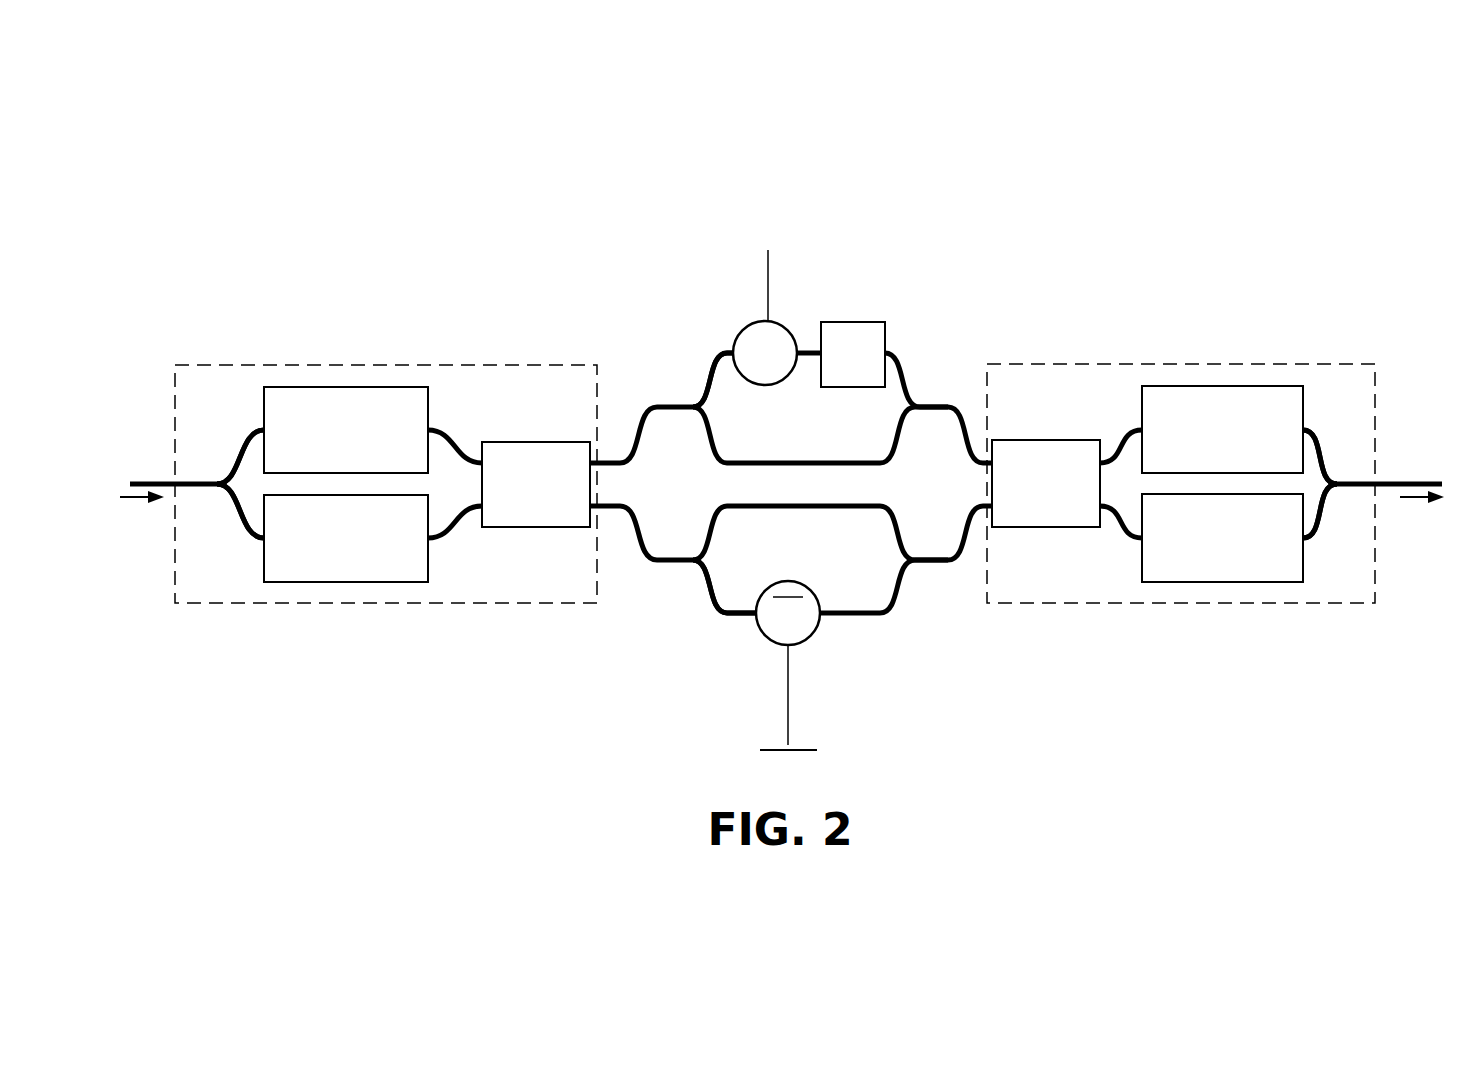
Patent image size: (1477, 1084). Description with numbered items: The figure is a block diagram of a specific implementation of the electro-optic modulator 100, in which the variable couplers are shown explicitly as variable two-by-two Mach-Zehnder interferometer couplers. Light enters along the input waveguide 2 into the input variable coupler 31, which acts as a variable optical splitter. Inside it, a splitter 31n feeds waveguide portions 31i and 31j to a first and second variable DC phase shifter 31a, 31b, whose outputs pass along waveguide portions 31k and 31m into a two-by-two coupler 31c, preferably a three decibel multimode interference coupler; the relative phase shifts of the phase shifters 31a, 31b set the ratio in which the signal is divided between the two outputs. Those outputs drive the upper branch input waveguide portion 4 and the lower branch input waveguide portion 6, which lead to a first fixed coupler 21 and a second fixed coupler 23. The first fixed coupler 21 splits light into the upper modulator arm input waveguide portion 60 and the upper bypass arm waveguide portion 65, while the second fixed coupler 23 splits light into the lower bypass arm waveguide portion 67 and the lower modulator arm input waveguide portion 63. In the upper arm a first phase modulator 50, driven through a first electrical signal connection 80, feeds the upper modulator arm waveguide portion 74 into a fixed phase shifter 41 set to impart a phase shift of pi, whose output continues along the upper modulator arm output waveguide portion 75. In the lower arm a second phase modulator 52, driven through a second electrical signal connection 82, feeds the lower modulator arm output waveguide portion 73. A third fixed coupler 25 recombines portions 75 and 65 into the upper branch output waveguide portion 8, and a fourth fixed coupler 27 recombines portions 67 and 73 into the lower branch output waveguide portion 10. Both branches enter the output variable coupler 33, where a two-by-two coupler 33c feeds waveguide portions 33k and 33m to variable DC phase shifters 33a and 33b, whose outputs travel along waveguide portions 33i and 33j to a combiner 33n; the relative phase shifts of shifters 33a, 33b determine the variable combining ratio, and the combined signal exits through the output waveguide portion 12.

The electro-optic modulator 100 is at (390, 170).
The input waveguide 2 is at (155, 481).
The input variable coupler 31 is at (474, 362).
The first variable DC phase shifter 31a is at (328, 464).
The second variable DC phase shifter 31b is at (328, 572).
The 2×2 coupler 31c is at (518, 519).
The waveguide portion 31i is at (243, 428).
The waveguide portion 31j is at (243, 538).
The waveguide portion 31k is at (447, 427).
The waveguide portion 31m is at (447, 543).
The splitter 31n is at (218, 479).
The upper branch input waveguide portion 4 is at (648, 400).
The lower branch input waveguide portion 6 is at (647, 566).
The first fixed coupler 21 is at (698, 425).
The second fixed coupler 23 is at (698, 548).
The third fixed coupler 25 is at (912, 418).
The fourth fixed coupler 27 is at (912, 547).
The upper modulator arm input waveguide portion 60 is at (730, 348).
The lower modulator arm input waveguide portion 63 is at (734, 608).
The upper bypass arm waveguide portion 65 is at (802, 447).
The lower bypass arm waveguide portion 67 is at (804, 512).
The first phase modulator 50 is at (750, 322).
The second phase modulator 52 is at (777, 647).
The first electrical signal connection 80 is at (767, 285).
The second electrical signal connection 82 is at (790, 690).
The upper modulator arm waveguide portion 74 is at (808, 366).
The fixed phase shifter 41 is at (885, 322).
The upper modulator arm output waveguide portion 75 is at (906, 372).
The lower modulator arm output waveguide portion 73 is at (882, 608).
The upper branch output waveguide portion 8 is at (950, 401).
The lower branch output waveguide portion 10 is at (945, 568).
The output variable coupler 33 is at (1254, 362).
The first variable DC phase shifter 33a is at (1204, 464).
The second variable DC phase shifter 33b is at (1204, 572).
The 2×2 coupler 33c is at (1028, 519).
The waveguide portion 33i is at (1334, 428).
The waveguide portion 33j is at (1338, 532).
The waveguide portion 33k is at (1125, 428).
The waveguide portion 33m is at (1125, 542).
The combiner 33n is at (1347, 478).
The output waveguide portion 12 is at (1402, 479).